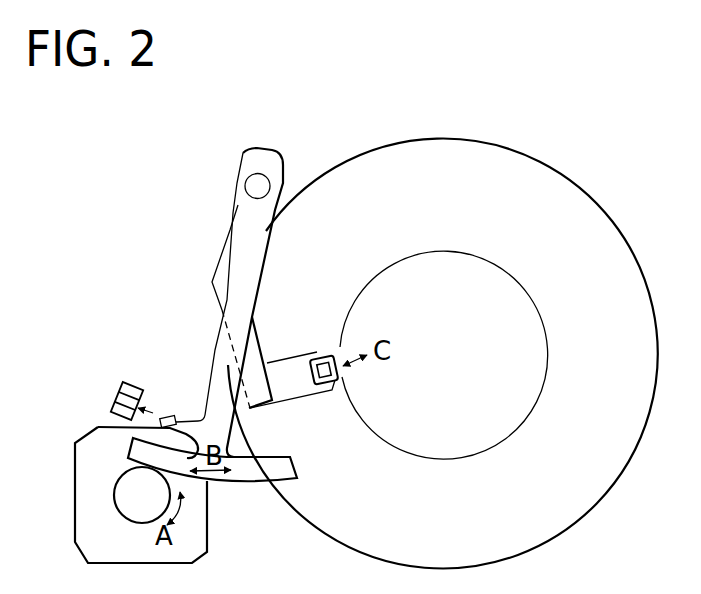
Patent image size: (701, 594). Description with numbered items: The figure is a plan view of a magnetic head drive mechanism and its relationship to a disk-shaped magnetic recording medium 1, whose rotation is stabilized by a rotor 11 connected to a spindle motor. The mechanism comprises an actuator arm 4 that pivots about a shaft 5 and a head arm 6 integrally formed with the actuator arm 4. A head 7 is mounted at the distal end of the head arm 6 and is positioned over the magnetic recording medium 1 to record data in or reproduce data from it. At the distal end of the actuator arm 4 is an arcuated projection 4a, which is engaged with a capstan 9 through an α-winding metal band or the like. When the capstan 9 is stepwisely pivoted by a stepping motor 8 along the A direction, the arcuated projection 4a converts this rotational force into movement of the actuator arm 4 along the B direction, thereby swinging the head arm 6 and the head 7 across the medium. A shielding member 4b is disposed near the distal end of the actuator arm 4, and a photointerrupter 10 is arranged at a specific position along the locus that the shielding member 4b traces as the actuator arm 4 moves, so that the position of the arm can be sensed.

The magnetic recording medium 1 is at (523, 153).
The rotor 11 is at (437, 459).
The actuator arm 4 is at (250, 150).
The arcuated projection 4a is at (243, 483).
The shielding member 4b is at (173, 417).
The shaft 5 is at (245, 186).
The head arm 6 is at (218, 250).
The head 7 is at (315, 382).
The stepping motor 8 is at (88, 436).
The capstan 9 is at (114, 503).
The photointerrupter 10 is at (125, 382).